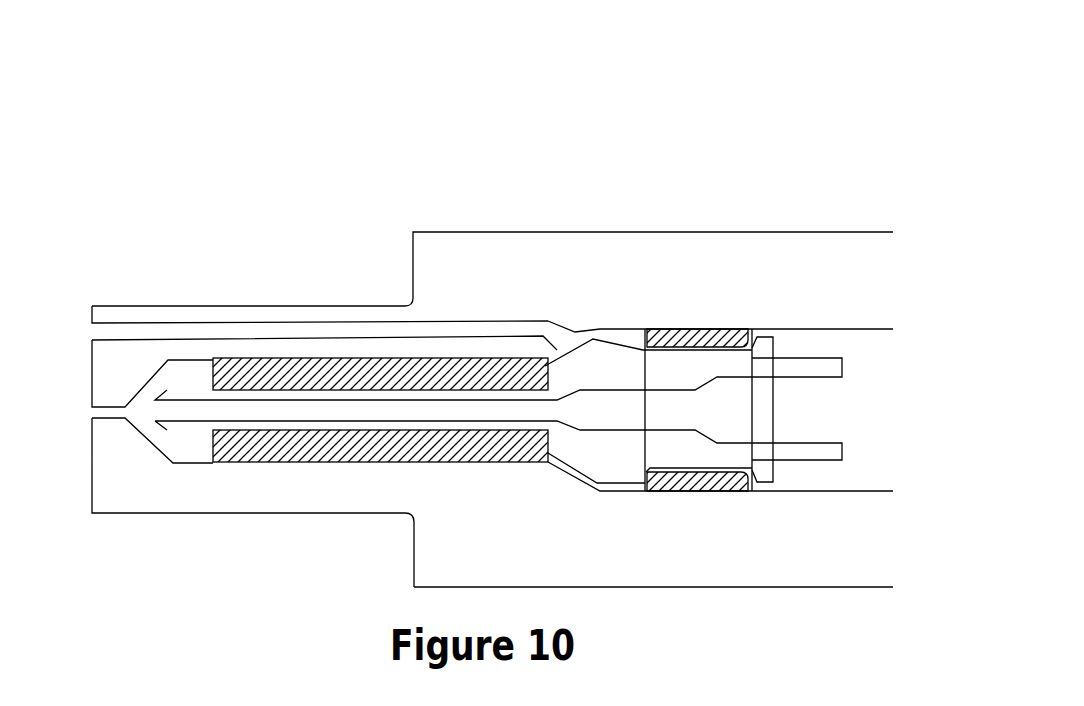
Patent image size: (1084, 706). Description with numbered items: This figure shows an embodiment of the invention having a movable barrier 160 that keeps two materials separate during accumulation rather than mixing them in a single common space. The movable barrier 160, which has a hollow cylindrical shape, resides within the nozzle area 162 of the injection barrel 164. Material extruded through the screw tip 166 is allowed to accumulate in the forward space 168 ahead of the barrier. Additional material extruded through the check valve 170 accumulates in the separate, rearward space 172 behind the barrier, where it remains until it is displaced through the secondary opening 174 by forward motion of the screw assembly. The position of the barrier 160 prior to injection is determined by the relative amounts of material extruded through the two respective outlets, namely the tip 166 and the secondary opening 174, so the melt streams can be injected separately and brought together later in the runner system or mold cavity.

The movable barrier 160 is at (298, 367).
The nozzle area 162 is at (252, 515).
The injection barrel 164 is at (840, 587).
The screw tip 166 is at (165, 412).
The forward space 168 is at (172, 370).
The check valve 170 is at (707, 328).
The rearward space 172 is at (563, 347).
The secondary opening 174 is at (120, 328).